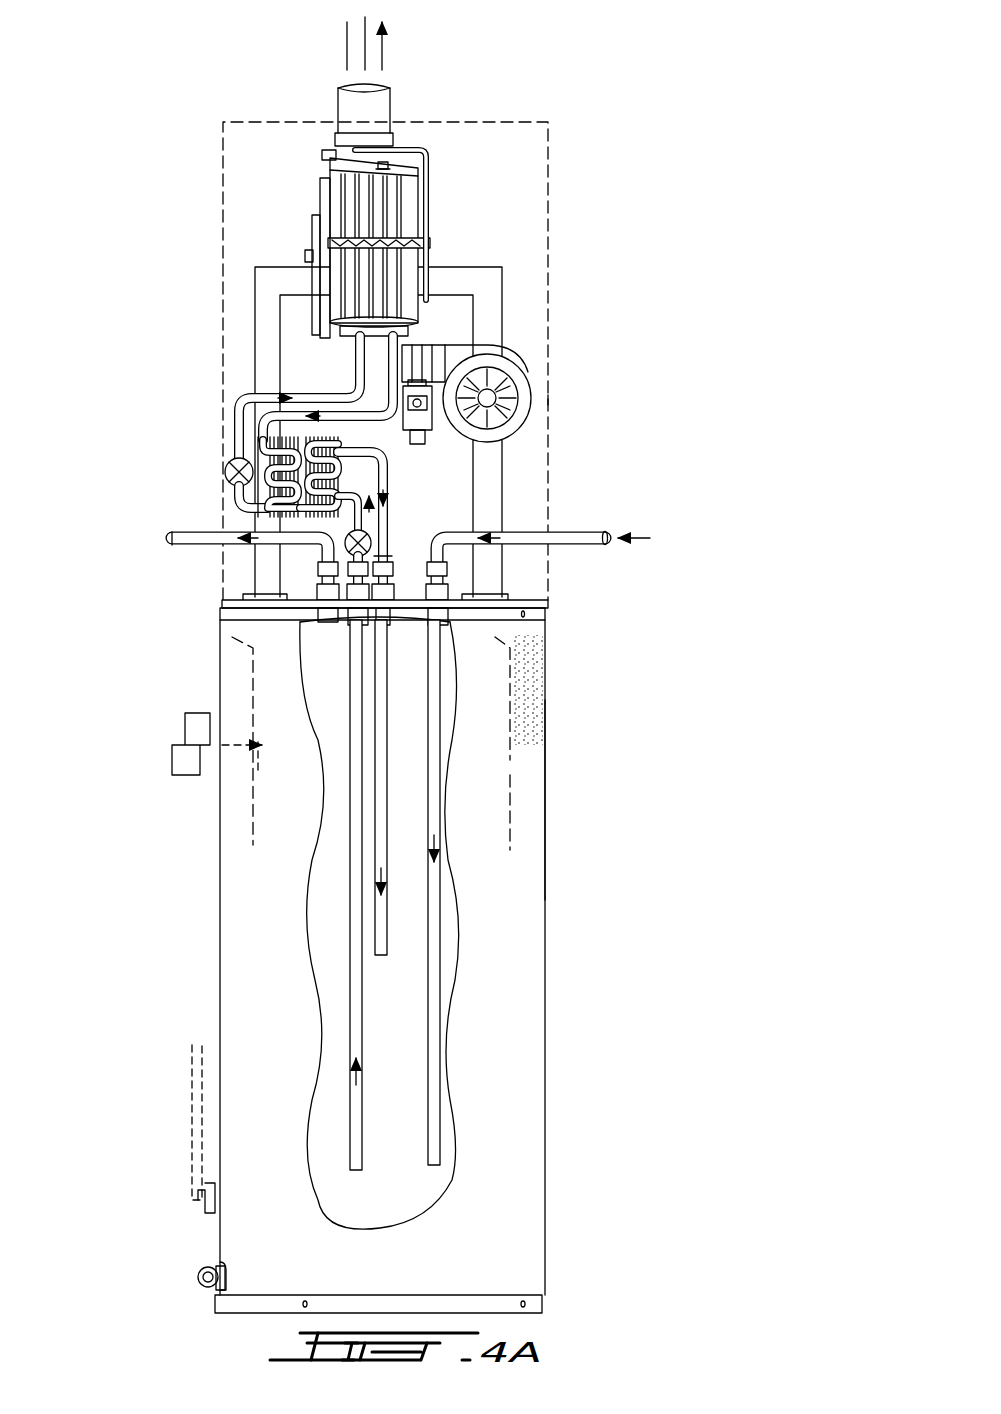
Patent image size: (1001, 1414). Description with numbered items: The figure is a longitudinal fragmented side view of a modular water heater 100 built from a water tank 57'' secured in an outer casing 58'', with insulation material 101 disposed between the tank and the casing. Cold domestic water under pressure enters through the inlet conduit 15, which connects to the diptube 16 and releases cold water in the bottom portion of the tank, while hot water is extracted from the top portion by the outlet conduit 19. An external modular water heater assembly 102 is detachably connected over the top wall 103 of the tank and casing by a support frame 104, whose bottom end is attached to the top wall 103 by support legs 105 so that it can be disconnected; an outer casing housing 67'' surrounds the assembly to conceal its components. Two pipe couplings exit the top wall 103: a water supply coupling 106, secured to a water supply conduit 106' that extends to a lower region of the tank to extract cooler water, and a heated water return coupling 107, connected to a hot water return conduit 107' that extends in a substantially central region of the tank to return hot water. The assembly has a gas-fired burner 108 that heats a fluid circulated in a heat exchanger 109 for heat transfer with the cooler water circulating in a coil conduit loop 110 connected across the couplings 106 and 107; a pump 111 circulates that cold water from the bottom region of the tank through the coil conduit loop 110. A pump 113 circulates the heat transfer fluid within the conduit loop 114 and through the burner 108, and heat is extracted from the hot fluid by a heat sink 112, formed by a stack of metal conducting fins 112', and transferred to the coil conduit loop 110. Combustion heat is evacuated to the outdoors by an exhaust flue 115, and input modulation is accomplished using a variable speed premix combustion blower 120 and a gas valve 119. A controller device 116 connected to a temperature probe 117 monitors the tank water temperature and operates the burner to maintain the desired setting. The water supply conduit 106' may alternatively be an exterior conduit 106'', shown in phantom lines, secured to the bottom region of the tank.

The modular water heater 100 is at (684, 491).
The external modular water heater assembly 102 is at (505, 238).
The outer casing housing 67'' is at (605, 385).
The support frame 104 is at (503, 300).
The exhaust flue 115 is at (392, 104).
The gas-fired burner 108 is at (436, 178).
The variable speed premix combustion blower 120 is at (523, 370).
The gas valve 119 is at (438, 414).
The heat exchanger 109 is at (294, 437).
The pump 113 is at (224, 472).
The conduit loop 114 is at (266, 455).
The heat sink 112 is at (236, 444).
The metal conducting fins 112' is at (236, 483).
The coil conduit loop 110 is at (360, 452).
The pump 111 is at (370, 540).
The outlet conduit 19 is at (190, 548).
The inlet conduit 15 is at (578, 537).
The heated water return coupling 107 is at (490, 550).
The support legs 105 is at (505, 601).
The top wall 103 is at (522, 603).
The water supply coupling 106 is at (309, 631).
The insulation material 101 is at (530, 678).
The water tank 57'' is at (452, 925).
The outer casing 58'' is at (594, 800).
The controller device 116 is at (190, 745).
The temperature probe 117 is at (258, 770).
The water supply conduit 106' is at (255, 895).
The hot water return conduit 107' is at (492, 787).
The diptube 16 is at (430, 985).
The exterior conduit 106'' is at (155, 1167).